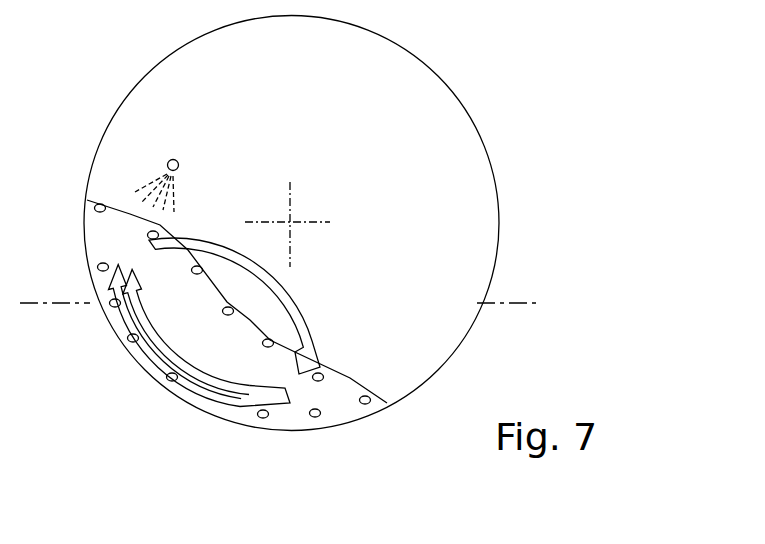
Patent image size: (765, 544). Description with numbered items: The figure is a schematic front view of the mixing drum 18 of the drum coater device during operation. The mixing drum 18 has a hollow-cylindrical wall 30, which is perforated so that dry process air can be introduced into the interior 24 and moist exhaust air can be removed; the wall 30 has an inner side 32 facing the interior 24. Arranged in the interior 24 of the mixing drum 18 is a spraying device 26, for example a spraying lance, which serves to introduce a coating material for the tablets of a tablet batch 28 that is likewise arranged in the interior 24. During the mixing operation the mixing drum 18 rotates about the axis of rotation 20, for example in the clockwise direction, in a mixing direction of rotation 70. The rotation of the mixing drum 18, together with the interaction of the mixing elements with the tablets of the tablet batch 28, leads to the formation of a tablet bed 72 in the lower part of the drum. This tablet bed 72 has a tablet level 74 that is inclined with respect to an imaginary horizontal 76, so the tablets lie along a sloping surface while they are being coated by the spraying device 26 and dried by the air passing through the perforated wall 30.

The mixing drum 18 is at (485, 142).
The axis of rotation 20 is at (290, 222).
The interior 24 is at (340, 108).
The spraying device 26 is at (176, 159).
The tablet batch 28 is at (298, 410).
The wall 30 is at (461, 103).
The inner side 32 is at (427, 370).
The mixing direction of rotation 70 is at (465, 290).
The tablet bed 72 is at (217, 370).
The tablet level 74 is at (343, 377).
The imaginary horizontal 76 is at (538, 303).